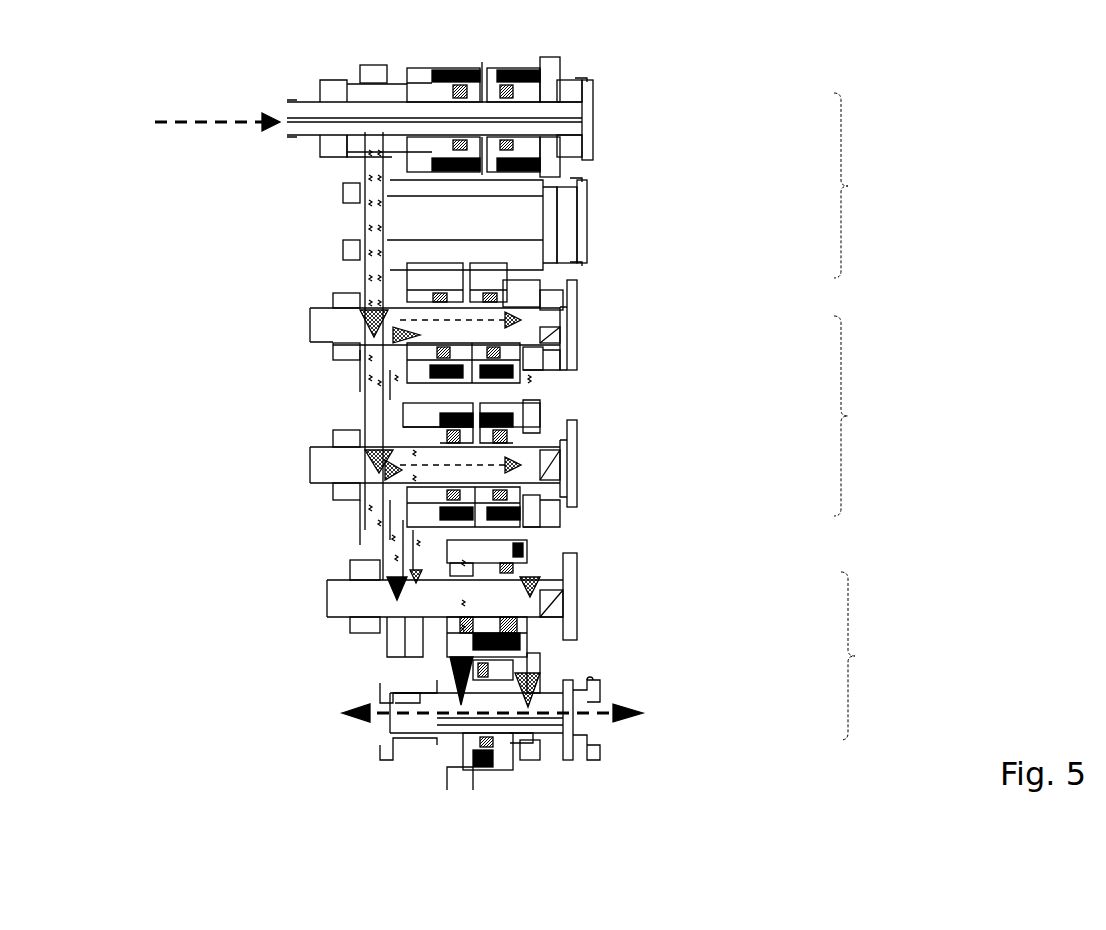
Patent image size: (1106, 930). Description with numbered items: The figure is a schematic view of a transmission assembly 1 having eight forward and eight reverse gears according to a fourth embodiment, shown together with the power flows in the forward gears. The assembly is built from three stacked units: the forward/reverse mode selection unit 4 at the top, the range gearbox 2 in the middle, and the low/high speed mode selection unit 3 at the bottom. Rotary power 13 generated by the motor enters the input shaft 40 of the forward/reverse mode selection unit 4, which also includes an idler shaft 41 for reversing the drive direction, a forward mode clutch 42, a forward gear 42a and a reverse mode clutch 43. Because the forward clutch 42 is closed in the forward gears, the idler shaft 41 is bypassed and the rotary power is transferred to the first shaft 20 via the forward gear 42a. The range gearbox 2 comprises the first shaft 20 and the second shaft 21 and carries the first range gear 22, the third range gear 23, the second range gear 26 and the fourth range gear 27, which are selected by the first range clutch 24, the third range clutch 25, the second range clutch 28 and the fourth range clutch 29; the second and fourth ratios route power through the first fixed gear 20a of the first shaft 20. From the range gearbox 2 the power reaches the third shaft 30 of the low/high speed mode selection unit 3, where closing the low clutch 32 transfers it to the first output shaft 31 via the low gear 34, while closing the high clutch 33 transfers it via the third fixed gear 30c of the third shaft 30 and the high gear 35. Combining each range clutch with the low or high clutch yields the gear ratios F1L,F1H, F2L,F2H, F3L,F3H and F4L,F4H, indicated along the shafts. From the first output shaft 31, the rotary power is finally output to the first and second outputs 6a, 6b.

The transmission assembly 1 is at (753, 66).
The range gearbox 2 is at (857, 416).
The low/high speed mode selection unit 3 is at (861, 656).
The forward/reverse mode selection unit 4 is at (854, 185).
The transmission input 13 is at (183, 115).
The input shaft 40 is at (572, 110).
The idler shaft 41 is at (545, 248).
The forward mode clutch 42 is at (452, 68).
The forward gear 42a is at (360, 160).
The reverse mode clutch 43 is at (512, 66).
The first shaft 20 is at (548, 314).
The first fixed gear of the first shaft 20a is at (365, 368).
The second shaft 21 is at (548, 460).
The first range gear 22 is at (530, 358).
The third range gear 23 is at (370, 387).
The first range clutch 24 is at (500, 280).
The third range clutch 25 is at (415, 272).
The second range gear 26 is at (545, 522).
The fourth range gear 27 is at (380, 527).
The second range clutch 28 is at (528, 420).
The fourth range clutch 29 is at (400, 416).
The third shaft 30 is at (548, 592).
The third fixed gear of the third shaft 30c is at (540, 663).
The first output shaft 31 is at (590, 700).
The low clutch 32 is at (525, 640).
The high clutch 33 is at (490, 762).
The low gear 34 is at (455, 635).
The high gear 35 is at (538, 760).
The first output 6a is at (348, 727).
The second output 6b is at (632, 727).
The first and fifth gear ratios F1L,F1H is at (528, 383).
The second and sixth gear ratios F2L,F2H is at (548, 543).
The third and seventh gear ratios F3L,F3H is at (400, 533).
The fourth and eighth gear ratios F4L,F4H is at (400, 575).